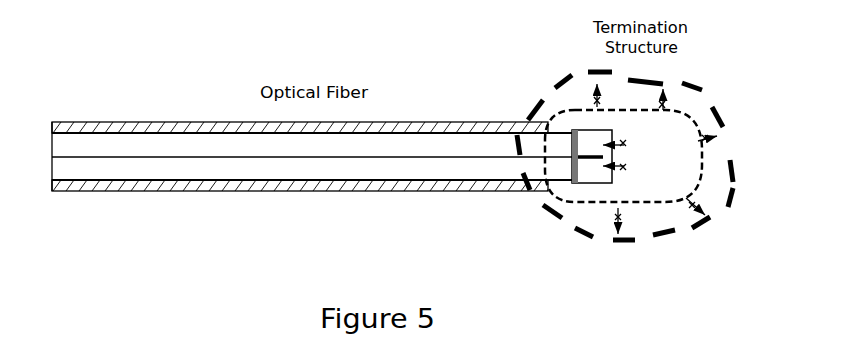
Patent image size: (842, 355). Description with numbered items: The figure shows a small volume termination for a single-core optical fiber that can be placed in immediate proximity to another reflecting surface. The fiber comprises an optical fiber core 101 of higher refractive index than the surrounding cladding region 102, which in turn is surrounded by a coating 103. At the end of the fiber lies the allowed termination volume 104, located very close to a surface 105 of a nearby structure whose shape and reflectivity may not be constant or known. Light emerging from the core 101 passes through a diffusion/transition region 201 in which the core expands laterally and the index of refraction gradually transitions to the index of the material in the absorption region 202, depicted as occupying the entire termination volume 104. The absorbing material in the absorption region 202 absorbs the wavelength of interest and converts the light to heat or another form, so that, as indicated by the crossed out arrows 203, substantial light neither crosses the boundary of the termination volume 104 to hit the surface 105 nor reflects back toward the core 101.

The optical fiber core 101 is at (175, 157).
The cladding region 102 is at (208, 167).
The coating 103 is at (217, 123).
The allowed termination volume 104 is at (687, 118).
The surface 105 is at (728, 200).
The diffusion/transition region 201 is at (603, 165).
The absorption region 202 is at (663, 162).
The crossed out arrows 203 is at (610, 218).